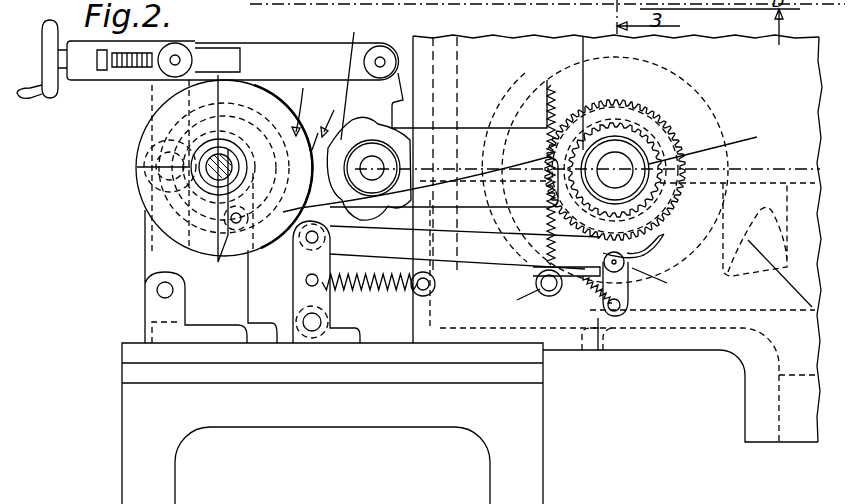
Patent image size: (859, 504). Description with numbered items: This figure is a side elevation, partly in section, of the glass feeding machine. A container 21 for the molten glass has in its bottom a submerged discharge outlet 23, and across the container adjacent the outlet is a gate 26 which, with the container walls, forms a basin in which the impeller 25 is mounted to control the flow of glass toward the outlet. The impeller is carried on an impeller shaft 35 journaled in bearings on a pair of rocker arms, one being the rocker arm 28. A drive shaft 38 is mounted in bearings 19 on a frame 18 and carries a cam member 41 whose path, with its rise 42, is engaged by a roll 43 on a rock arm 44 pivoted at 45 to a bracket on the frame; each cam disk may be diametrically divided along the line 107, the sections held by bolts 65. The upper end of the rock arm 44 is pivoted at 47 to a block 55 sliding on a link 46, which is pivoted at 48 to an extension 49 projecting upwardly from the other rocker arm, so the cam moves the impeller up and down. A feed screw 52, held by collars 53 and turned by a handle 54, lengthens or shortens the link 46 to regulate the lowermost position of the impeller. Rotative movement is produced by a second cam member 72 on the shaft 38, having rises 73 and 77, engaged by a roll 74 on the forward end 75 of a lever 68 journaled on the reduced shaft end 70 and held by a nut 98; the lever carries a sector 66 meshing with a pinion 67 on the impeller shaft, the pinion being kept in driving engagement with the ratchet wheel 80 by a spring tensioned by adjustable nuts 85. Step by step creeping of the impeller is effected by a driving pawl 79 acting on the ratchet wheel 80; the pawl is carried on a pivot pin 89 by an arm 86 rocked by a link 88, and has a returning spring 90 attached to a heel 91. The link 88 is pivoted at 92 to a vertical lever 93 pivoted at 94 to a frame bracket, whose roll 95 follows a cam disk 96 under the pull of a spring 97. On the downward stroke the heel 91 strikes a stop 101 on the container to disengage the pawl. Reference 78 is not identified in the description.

The frame 18 is at (122, 417).
The bearings 19 is at (198, 303).
The container 21 is at (776, 352).
The discharge outlet 23 is at (606, 352).
The impeller 25 is at (717, 119).
The gate 26 is at (750, 265).
The rocker arm 28 is at (487, 208).
The impeller shaft 35 is at (636, 152).
The drive shaft 38 is at (200, 182).
The cam member 41 is at (139, 137).
The cam rise 42 is at (177, 107).
The roll 43 is at (142, 159).
The rock arm 44 is at (148, 250).
The pivot 45 is at (157, 292).
The link 46 is at (336, 43).
The pivot 47 is at (182, 55).
The pivot 48 is at (381, 57).
The extension 49 is at (404, 96).
The feed screw 52 is at (147, 50).
The collars 53 is at (101, 72).
The handle 54 is at (48, 22).
The block 55 is at (126, 72).
The bolts 65 is at (160, 178).
The sector 66 is at (550, 82).
The pinion 67 is at (583, 38).
The lever 68 is at (460, 128).
The reduced shaft end 70 is at (373, 133).
The cam member 72 is at (304, 110).
The cam rise 73 is at (333, 113).
The roll 74 is at (231, 234).
The forward end of lever 75 is at (248, 229).
The cam rise 77 is at (243, 150).
The line 78 is at (797, 283).
The driving pawl 79 is at (661, 240).
The ratchet wheel 80 is at (717, 117).
The adjustable nuts 85 is at (716, 145).
The arm 86 is at (629, 292).
The link 88 is at (391, 252).
The pivot pin 89 is at (661, 282).
The returning spring 90 is at (589, 292).
The heel 91 is at (547, 296).
The pivot 92 is at (308, 243).
The vertical lever 93 is at (295, 288).
The pivot 94 is at (314, 322).
The roll 95 is at (315, 132).
The cam disk 96 is at (354, 76).
The spring 97 is at (394, 294).
The nut 98 is at (363, 190).
The stop 101 is at (515, 301).
The dividing line 107 is at (150, 171).